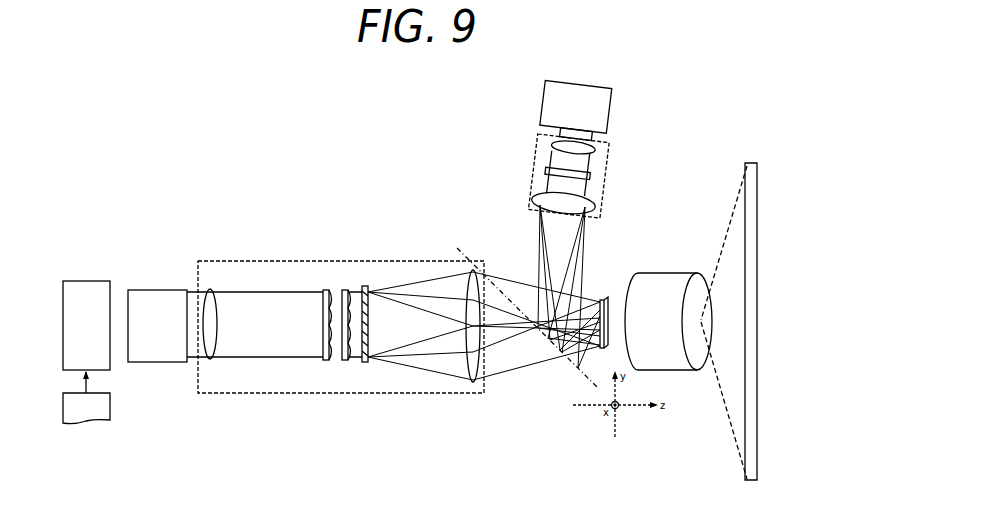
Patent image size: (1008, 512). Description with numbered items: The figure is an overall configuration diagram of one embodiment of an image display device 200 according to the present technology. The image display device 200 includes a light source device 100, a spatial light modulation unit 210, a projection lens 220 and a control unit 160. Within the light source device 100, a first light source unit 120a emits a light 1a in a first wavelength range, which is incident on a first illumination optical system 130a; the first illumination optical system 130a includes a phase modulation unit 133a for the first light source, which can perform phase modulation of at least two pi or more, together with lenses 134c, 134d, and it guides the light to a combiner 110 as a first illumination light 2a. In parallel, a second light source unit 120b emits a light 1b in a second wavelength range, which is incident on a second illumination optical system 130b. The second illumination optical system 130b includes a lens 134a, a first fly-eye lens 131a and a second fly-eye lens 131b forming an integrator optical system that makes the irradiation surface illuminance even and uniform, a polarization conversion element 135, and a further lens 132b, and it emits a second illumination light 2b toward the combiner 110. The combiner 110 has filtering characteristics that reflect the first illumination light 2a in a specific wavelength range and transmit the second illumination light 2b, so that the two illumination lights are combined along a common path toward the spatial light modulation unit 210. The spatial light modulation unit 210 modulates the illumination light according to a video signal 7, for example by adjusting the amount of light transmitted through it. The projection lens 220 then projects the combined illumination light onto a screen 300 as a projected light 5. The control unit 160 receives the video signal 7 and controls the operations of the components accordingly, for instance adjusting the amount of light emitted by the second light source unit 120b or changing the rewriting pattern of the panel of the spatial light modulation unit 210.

The image display device 200 is at (180, 193).
The light source device 100 is at (202, 236).
The control unit 160 is at (110, 283).
The video signal 7 is at (110, 412).
The second light source unit 120b is at (146, 290).
The second illumination optical system 130b is at (327, 261).
The lens 134a is at (213, 290).
The light in a second wavelength range 1b is at (208, 370).
The second illumination light 2b is at (259, 370).
The first fly-eye lens 131a is at (325, 290).
The second fly-eye lens 131b is at (348, 290).
The polarization conversion element 135 is at (366, 362).
The superimposing lens 132b is at (469, 374).
The combiner 110 is at (582, 376).
The spatial light modulation unit 210 is at (604, 298).
The projection lens 220 is at (648, 273).
The projected light 5 is at (720, 238).
The screen 300 is at (745, 472).
The first light source unit 120a is at (611, 110).
The first illumination optical system 130a is at (607, 165).
The lens 134c is at (546, 151).
The phase modulation unit for the first light source 133a is at (594, 177).
The lens 134d is at (532, 200).
The light in a first wavelength range 1a is at (548, 130).
The first illumination light 2a is at (596, 250).